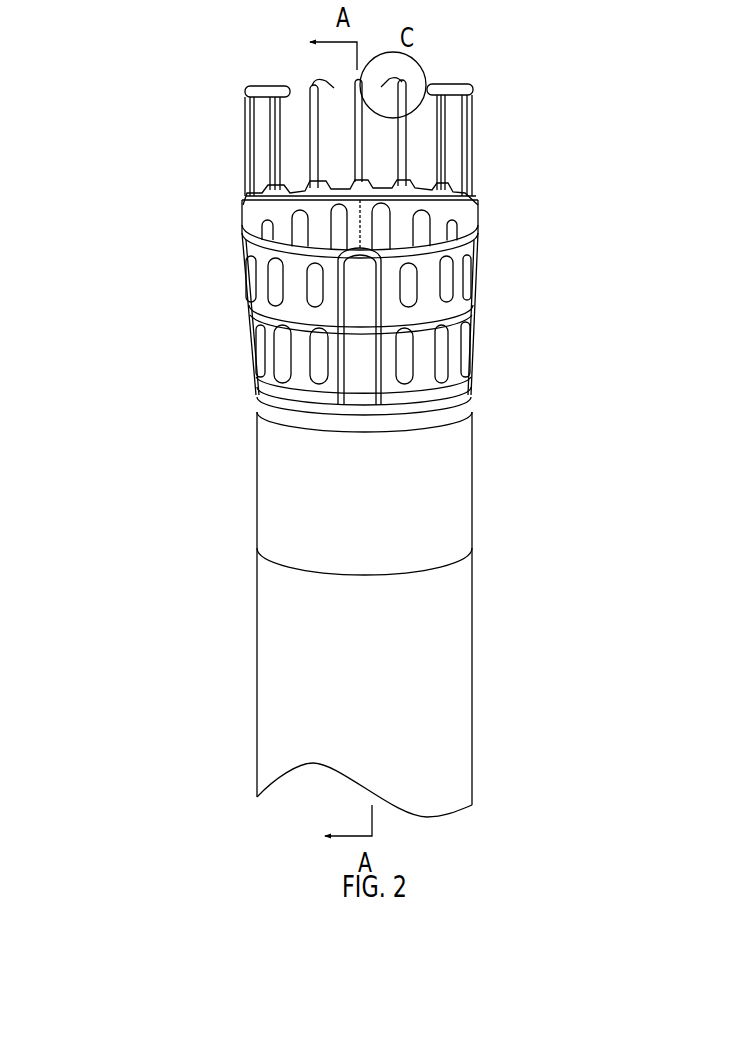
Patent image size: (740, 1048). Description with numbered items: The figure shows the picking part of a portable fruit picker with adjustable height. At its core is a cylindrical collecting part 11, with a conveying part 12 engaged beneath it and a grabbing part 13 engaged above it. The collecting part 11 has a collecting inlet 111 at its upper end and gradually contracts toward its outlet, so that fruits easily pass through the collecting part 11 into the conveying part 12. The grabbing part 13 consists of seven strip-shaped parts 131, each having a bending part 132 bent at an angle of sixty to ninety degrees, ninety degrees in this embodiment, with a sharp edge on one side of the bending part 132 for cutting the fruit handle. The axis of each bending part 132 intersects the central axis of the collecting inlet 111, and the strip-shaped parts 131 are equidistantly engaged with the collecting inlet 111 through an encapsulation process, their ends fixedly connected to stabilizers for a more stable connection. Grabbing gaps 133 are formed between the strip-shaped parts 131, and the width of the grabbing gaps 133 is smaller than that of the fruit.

The collecting part 11 is at (476, 279).
The collecting inlet 111 is at (268, 203).
The conveying part 12 is at (452, 511).
The grabbing part 13 is at (367, 127).
The strip-shaped part 131 is at (469, 141).
The bending part 132 is at (466, 86).
The grabbing gap 133 is at (267, 154).